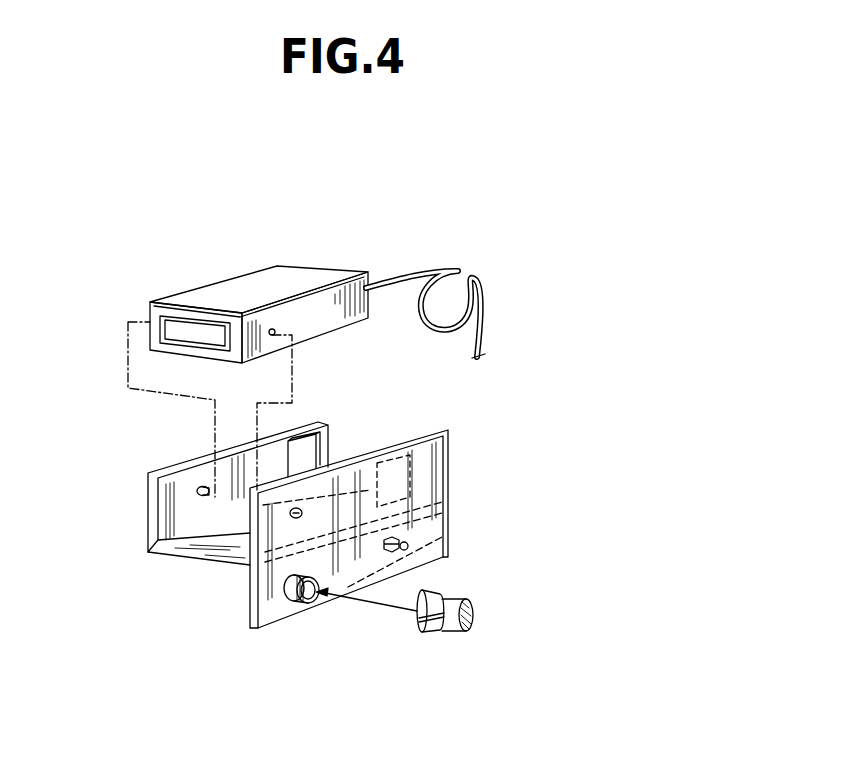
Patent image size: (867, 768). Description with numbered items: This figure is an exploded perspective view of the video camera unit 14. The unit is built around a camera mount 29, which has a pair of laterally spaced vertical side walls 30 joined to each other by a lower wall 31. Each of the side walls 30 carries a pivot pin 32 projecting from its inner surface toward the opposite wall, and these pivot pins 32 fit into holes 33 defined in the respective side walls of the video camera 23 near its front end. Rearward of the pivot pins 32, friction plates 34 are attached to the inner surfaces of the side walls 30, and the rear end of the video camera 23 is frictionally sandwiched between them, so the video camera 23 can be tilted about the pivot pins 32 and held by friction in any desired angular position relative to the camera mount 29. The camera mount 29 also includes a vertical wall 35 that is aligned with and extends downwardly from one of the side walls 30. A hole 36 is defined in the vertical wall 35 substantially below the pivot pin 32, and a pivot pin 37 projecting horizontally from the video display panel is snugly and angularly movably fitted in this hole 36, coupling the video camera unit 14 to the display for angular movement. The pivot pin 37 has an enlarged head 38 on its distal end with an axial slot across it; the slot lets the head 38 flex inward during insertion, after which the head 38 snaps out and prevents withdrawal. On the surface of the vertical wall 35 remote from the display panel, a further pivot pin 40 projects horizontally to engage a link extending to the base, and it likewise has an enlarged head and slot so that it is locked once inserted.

The video camera unit 14 is at (497, 366).
The video camera 23 is at (253, 284).
The camera mount 29 is at (166, 560).
The side walls 30 is at (175, 464).
The lower wall 31 is at (217, 563).
The pivot pins 32 is at (290, 513).
The holes 33 is at (276, 331).
The friction plates 34 is at (306, 450).
The vertical wall 35 is at (250, 630).
The hole 36 is at (303, 604).
The pivot pin 37 is at (445, 633).
The enlarged head 38 is at (417, 624).
The pivot pin 40 is at (402, 547).